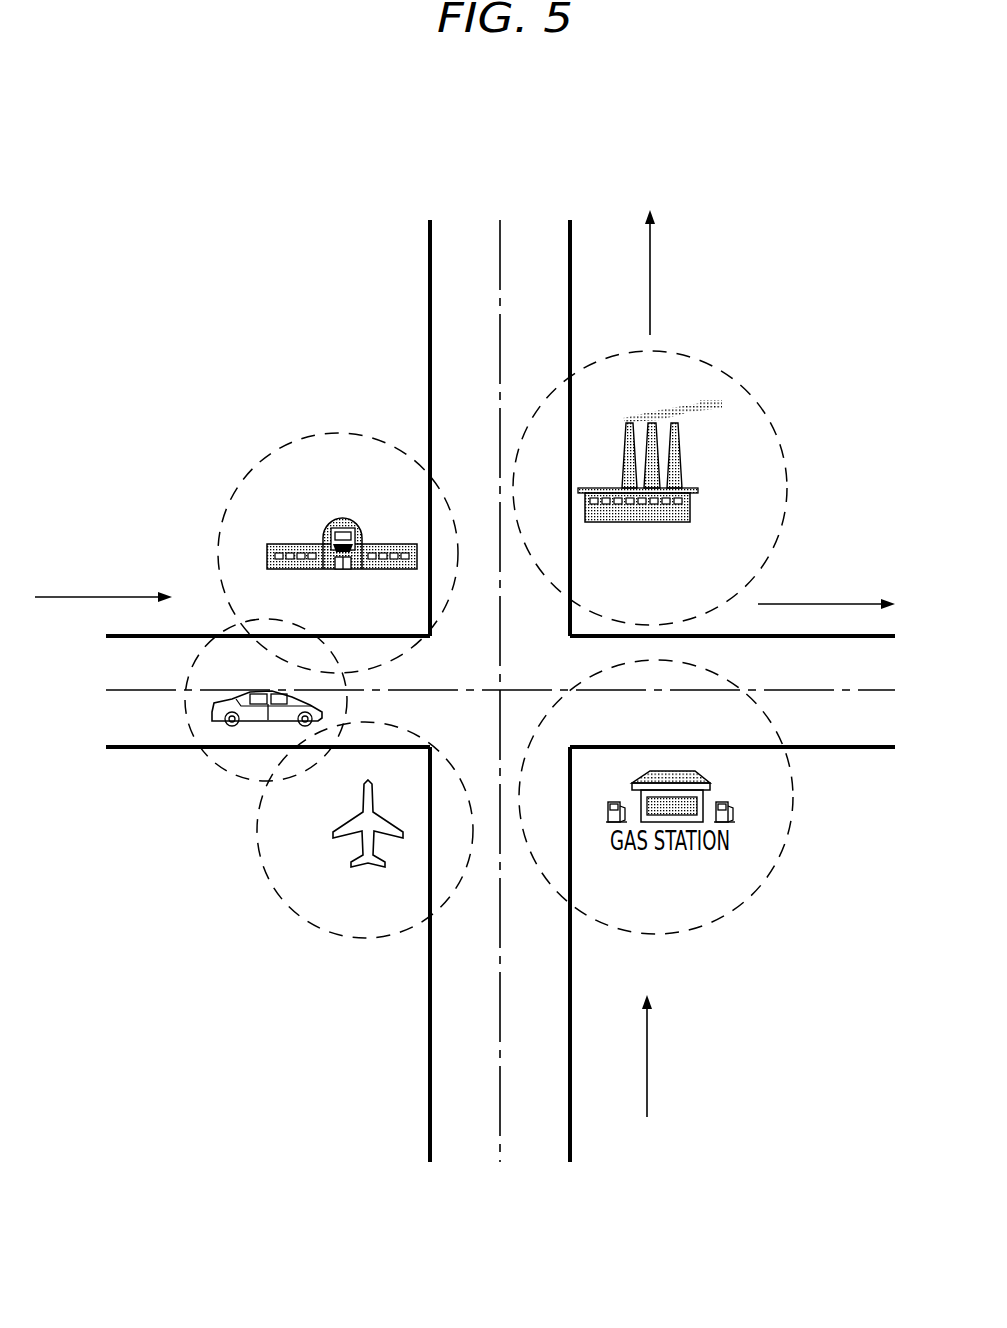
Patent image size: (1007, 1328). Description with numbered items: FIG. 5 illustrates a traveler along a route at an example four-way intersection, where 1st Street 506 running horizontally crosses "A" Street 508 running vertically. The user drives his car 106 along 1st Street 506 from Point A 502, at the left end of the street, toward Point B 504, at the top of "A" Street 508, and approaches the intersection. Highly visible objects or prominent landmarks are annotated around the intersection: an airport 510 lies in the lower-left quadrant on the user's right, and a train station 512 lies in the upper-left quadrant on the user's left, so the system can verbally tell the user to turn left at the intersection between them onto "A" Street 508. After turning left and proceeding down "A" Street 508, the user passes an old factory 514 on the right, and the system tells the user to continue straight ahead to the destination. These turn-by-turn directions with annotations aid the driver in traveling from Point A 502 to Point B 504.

The car 106 is at (250, 692).
The Point A 502 is at (82, 776).
The Point B 504 is at (440, 153).
The 1st Street 506 is at (105, 560).
The "A" Street 508 is at (630, 206).
The airport 510 is at (358, 843).
The train station 512 is at (344, 517).
The old factory 514 is at (682, 468).